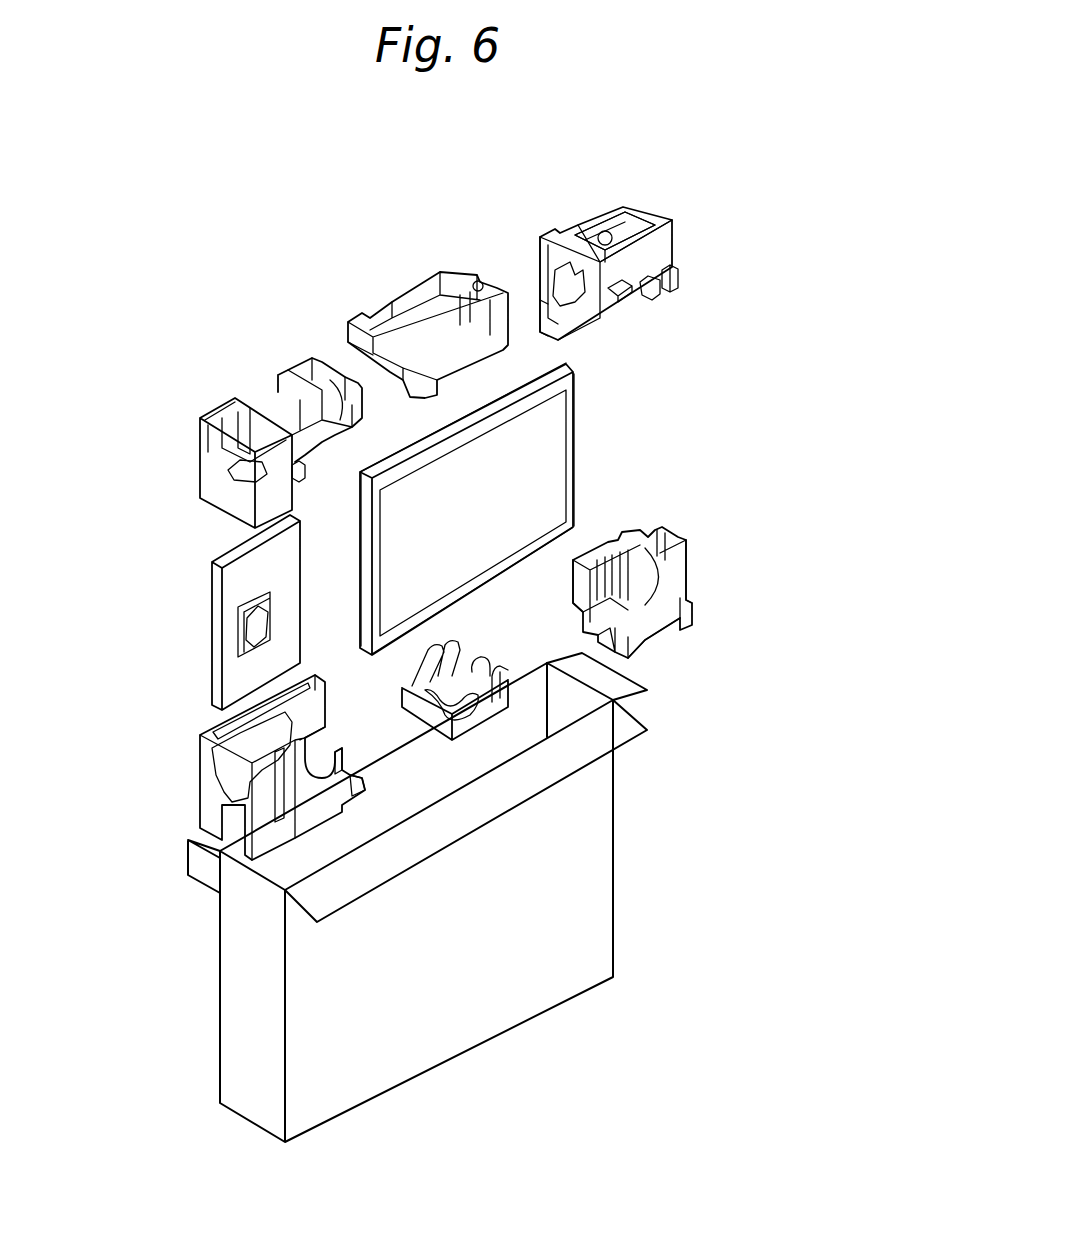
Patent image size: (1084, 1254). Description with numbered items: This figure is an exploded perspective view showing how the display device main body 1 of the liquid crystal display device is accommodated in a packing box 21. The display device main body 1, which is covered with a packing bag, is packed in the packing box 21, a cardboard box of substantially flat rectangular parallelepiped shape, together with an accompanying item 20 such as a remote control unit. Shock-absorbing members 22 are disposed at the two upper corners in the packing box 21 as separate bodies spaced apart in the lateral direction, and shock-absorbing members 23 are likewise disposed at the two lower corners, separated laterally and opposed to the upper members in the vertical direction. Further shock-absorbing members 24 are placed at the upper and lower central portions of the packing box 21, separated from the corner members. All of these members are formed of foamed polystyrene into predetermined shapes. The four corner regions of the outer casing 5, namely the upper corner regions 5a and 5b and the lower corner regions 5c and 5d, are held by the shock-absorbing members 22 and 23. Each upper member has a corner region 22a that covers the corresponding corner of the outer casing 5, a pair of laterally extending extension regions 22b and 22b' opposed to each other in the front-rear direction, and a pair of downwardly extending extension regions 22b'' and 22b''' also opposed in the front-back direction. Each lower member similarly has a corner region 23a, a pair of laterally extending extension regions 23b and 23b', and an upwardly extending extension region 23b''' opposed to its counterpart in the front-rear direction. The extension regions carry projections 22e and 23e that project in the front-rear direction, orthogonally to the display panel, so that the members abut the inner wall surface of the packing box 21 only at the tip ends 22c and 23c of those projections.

The display device main body 1 is at (484, 530).
The outer casing 5 is at (481, 530).
The upper corner region 5a is at (585, 372).
The upper corner region 5b is at (358, 478).
The lower corner region 5c is at (586, 538).
The lower corner region 5d is at (364, 658).
The accompanying item 20 is at (228, 595).
The packing box 21 is at (598, 848).
The shock-absorbing member 22 is at (451, 325).
The corner region 22a is at (620, 203).
The extension region 22b is at (662, 311).
The extension region 22b' is at (517, 250).
The extension region 22b'' is at (703, 241).
The extension region 22b''' is at (544, 302).
The tip end 22c is at (322, 492).
The projection 22e is at (663, 303).
The shock-absorbing member 23 is at (481, 772).
The corner region 23a is at (250, 855).
The extension region 23b is at (686, 663).
The extension region 23b' is at (714, 561).
The extension region 23b''' is at (578, 586).
The tip end 23c is at (357, 780).
The projection 23e is at (338, 782).
The shock-absorbing member 24 is at (425, 330).